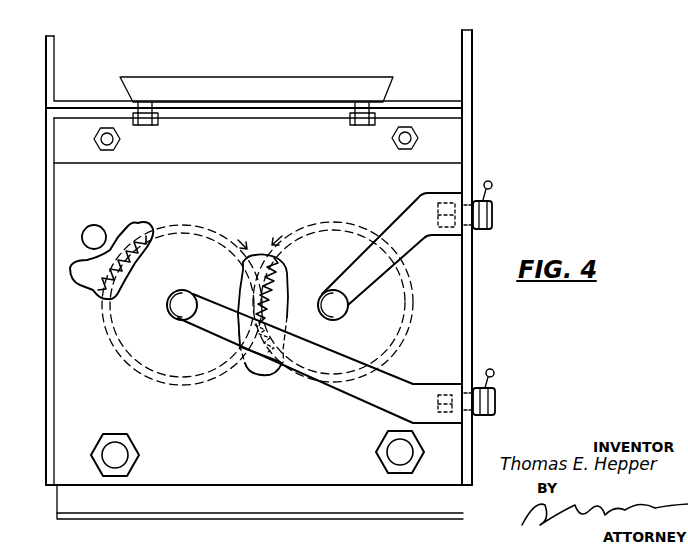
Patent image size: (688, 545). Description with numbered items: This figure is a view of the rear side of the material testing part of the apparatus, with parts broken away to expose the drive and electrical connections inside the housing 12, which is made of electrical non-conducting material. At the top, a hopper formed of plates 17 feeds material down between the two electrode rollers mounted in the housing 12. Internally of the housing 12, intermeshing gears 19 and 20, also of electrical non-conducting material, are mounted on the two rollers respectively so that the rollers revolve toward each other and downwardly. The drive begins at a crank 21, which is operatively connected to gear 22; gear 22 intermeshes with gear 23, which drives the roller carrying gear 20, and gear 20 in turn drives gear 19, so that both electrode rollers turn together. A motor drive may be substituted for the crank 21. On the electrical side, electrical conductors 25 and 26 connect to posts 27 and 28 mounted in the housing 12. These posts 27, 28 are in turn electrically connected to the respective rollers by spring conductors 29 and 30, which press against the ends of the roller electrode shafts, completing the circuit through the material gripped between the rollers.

The housing 12 is at (450, 333).
The plates 17 is at (283, 77).
The gear 19 is at (286, 281).
The gear 20 is at (240, 292).
The crank 21 is at (93, 224).
The gear 22 is at (92, 283).
The gear 23 is at (124, 273).
The electrical conductor 25 is at (492, 184).
The electrical conductor 26 is at (491, 369).
The post 27 is at (492, 216).
The post 28 is at (496, 402).
The spring conductor 29 is at (405, 219).
The spring conductor 30 is at (377, 396).